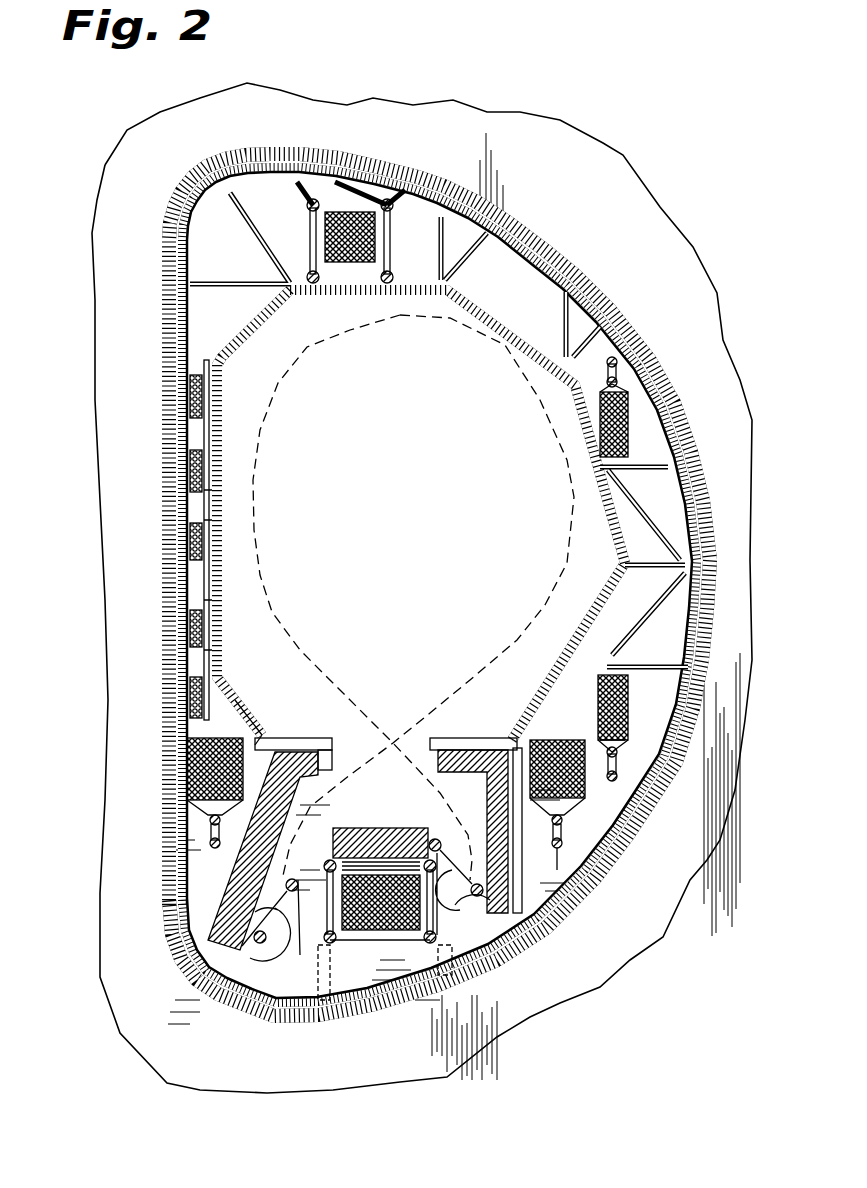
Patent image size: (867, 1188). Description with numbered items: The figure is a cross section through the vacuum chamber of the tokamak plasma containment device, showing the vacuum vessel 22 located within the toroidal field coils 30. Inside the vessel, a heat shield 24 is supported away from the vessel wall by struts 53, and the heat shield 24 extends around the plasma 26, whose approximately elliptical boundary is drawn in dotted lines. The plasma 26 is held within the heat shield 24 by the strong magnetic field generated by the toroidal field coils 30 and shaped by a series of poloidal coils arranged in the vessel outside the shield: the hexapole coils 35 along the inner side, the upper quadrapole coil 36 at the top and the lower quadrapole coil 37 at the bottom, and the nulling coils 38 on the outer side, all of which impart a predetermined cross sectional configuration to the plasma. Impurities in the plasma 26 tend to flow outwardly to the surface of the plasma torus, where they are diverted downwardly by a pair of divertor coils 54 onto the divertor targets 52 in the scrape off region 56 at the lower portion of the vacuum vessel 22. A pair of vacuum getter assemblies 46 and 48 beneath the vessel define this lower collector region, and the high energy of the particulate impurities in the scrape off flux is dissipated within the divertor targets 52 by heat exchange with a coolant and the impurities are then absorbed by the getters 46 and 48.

The vacuum vessel 22 is at (642, 347).
The heat shield 24 is at (525, 330).
The plasma 26 is at (452, 456).
The toroidal field coils 30 is at (617, 167).
The hexapole coils 35 is at (190, 468).
The upper quadrapole coil 36 is at (352, 213).
The lower quadrapole coil 37 is at (383, 927).
The nulling coils 38 is at (628, 413).
The vacuum getter assembly 46 is at (285, 780).
The vacuum getter assembly 48 is at (495, 805).
The divertor targets 52 is at (280, 957).
The struts 53 is at (463, 265).
The divertor coils 54 is at (195, 772).
The scrape off region 56 is at (398, 794).